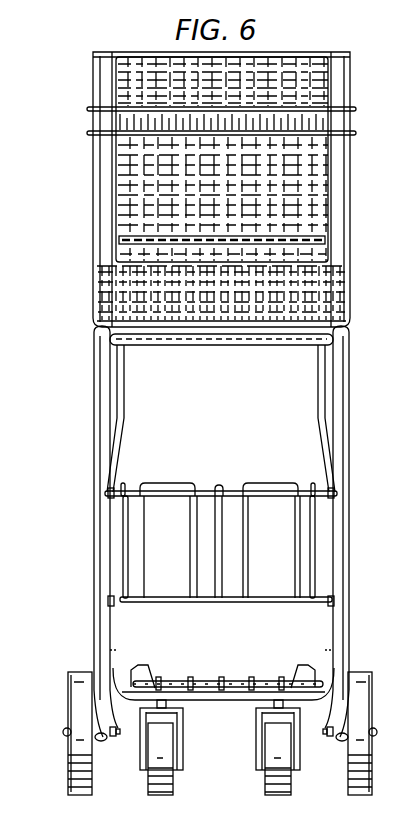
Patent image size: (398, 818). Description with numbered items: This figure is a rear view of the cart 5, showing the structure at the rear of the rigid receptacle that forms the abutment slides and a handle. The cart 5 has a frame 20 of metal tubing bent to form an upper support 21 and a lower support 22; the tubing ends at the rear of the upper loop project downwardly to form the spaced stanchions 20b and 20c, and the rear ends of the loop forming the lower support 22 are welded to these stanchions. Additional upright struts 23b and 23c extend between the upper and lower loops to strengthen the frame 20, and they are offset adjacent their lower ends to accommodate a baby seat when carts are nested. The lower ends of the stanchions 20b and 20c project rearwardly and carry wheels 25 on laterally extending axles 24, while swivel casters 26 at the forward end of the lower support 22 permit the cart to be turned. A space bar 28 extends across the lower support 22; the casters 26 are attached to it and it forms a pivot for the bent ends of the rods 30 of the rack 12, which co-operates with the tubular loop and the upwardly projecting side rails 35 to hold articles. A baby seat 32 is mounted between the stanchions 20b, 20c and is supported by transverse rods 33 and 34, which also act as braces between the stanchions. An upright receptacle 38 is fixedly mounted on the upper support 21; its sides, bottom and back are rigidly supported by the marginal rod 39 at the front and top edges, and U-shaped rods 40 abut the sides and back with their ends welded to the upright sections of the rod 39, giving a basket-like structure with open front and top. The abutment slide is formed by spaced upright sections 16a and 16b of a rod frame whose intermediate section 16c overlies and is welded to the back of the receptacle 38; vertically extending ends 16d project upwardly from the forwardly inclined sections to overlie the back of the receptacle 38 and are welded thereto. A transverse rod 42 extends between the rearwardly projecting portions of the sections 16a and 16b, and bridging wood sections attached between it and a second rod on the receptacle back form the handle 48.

The cart 5 is at (58, 102).
The rack 12 is at (222, 666).
The abutment slide section 16a is at (112, 185).
The abutment slide section 16b is at (338, 190).
The intermediate section 16c is at (300, 263).
The vertically extending ends 16d is at (110, 78).
The frame 20 is at (60, 653).
The stanchion 20b is at (95, 455).
The stanchion 20c is at (345, 476).
The upper support 21 is at (185, 349).
The lower support 22 is at (243, 702).
The upright strut 23b is at (117, 408).
The upright strut 23c is at (317, 414).
The axle 24 is at (66, 732).
The wheel 25 is at (72, 772).
The caster 26 is at (266, 783).
The space bar 28 is at (258, 680).
The rod 30 is at (160, 672).
The baby seat 32 is at (222, 492).
The transverse rod 33 is at (328, 490).
The transverse rod 34 is at (330, 605).
The side rail 35 is at (112, 648).
The upright receptacle 38 is at (80, 256).
The marginal rod 39 is at (92, 152).
The U-shaped rod 40 is at (93, 133).
The transverse rod 42 is at (92, 290).
The handle 48 is at (314, 241).